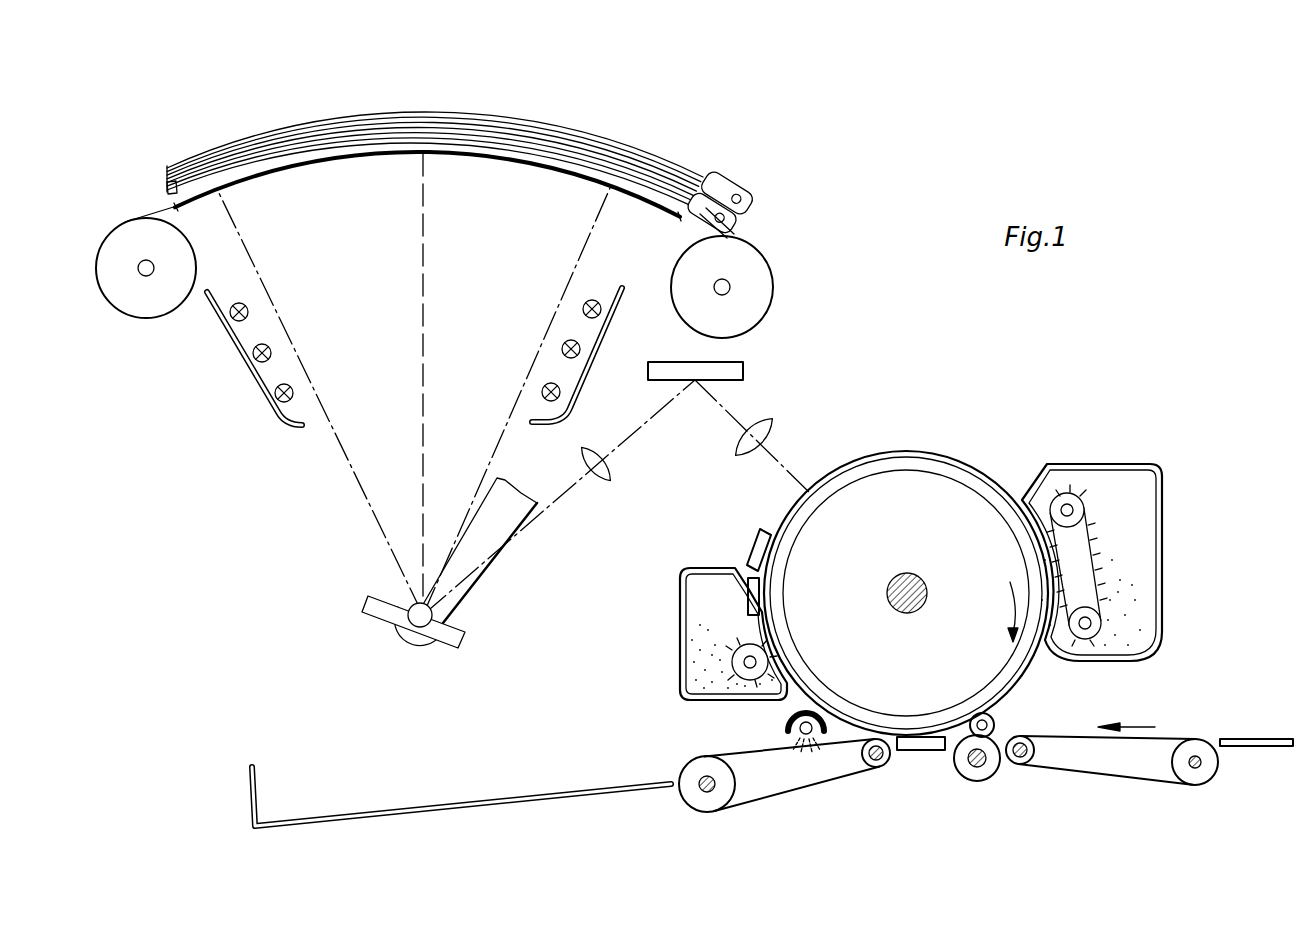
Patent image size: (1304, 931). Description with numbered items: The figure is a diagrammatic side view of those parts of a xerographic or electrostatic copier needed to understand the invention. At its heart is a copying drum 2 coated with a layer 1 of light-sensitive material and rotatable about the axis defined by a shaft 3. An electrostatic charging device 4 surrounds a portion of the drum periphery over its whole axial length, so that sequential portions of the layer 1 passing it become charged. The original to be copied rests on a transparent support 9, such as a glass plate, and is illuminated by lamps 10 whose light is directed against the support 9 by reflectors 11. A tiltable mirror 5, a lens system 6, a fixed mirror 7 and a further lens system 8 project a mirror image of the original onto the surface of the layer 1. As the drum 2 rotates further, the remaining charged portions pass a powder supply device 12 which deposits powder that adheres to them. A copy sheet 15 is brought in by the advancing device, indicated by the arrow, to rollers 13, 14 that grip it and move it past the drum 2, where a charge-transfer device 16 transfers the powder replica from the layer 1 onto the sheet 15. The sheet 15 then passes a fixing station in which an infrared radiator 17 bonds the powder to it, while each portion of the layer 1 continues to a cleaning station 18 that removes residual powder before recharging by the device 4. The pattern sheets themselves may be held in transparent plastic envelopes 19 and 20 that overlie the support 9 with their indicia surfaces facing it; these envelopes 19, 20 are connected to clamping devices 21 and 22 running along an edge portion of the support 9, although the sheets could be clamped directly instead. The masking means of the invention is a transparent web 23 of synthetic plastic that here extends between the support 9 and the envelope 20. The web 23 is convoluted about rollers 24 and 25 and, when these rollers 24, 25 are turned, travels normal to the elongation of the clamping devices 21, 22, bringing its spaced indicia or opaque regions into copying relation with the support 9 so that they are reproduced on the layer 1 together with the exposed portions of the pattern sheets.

The layer of light-sensitive material 1 is at (955, 462).
The copying drum 2 is at (983, 493).
The shaft 3 is at (906, 576).
The electrostatic charging device 4 is at (752, 558).
The tiltable mirror 5 is at (447, 630).
The lens system 6 is at (603, 478).
The fixed mirror 7 is at (746, 372).
The further lens system 8 is at (776, 433).
The transparent support 9 is at (172, 202).
The lamps 10 is at (291, 385).
The reflectors 11 is at (298, 432).
The powder supply device 12 is at (1141, 480).
The roller 13 is at (996, 722).
The roller 14 is at (977, 770).
The copy sheet 15 is at (1258, 740).
The charge-transfer device 16 is at (921, 752).
The infrared radiator 17 is at (786, 730).
The cleaning station 18 is at (706, 602).
The transparent plastic envelope 19 is at (219, 152).
The transparent plastic envelope 20 is at (173, 186).
The clamping device 21 is at (719, 188).
The clamping device 22 is at (744, 220).
The transparent web 23 is at (152, 205).
The roller 24 is at (137, 302).
The roller 25 is at (760, 296).